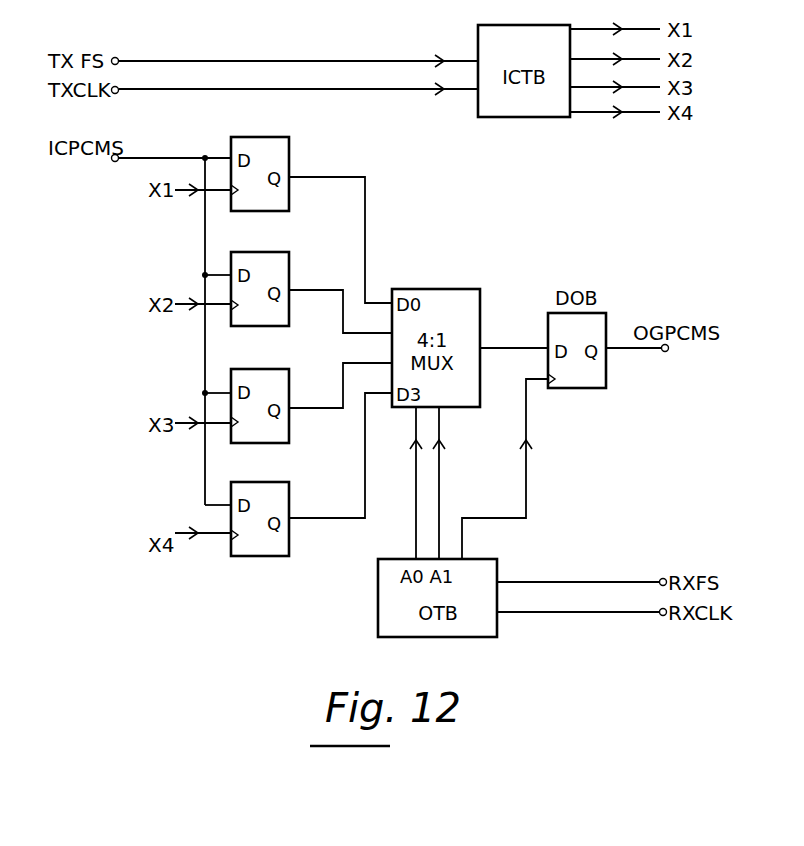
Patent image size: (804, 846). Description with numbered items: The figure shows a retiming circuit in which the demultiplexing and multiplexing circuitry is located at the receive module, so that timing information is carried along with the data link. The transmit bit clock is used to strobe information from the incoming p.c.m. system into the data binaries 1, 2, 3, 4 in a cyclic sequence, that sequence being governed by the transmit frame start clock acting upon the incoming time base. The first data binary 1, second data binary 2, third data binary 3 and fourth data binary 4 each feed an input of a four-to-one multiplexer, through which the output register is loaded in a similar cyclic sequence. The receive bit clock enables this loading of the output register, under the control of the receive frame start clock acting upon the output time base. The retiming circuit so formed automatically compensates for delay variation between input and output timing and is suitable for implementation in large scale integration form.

The data binary DB1 1 is at (311, 207).
The data binary DB2 2 is at (311, 280).
The data binary DB3 3 is at (311, 393).
The data binary DB4 4 is at (311, 474).